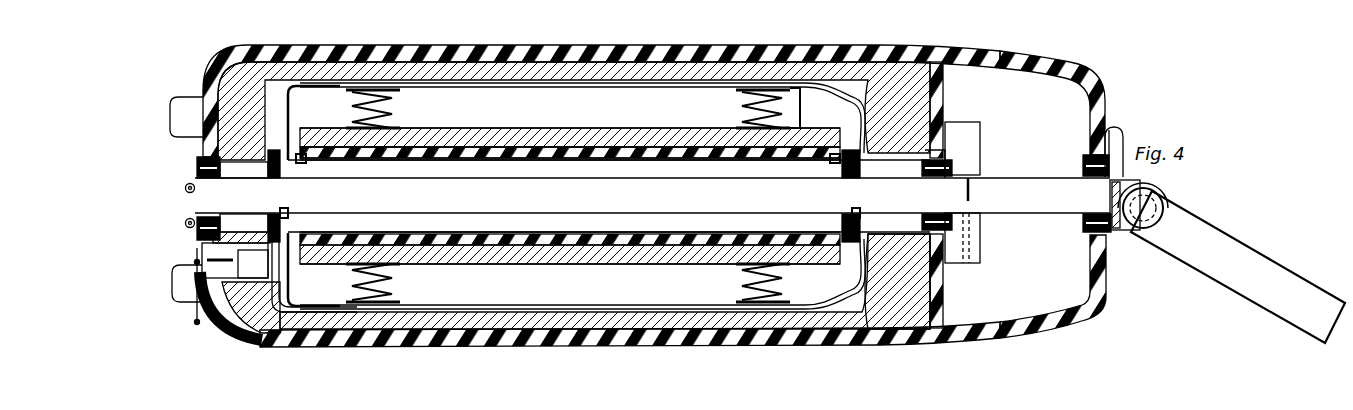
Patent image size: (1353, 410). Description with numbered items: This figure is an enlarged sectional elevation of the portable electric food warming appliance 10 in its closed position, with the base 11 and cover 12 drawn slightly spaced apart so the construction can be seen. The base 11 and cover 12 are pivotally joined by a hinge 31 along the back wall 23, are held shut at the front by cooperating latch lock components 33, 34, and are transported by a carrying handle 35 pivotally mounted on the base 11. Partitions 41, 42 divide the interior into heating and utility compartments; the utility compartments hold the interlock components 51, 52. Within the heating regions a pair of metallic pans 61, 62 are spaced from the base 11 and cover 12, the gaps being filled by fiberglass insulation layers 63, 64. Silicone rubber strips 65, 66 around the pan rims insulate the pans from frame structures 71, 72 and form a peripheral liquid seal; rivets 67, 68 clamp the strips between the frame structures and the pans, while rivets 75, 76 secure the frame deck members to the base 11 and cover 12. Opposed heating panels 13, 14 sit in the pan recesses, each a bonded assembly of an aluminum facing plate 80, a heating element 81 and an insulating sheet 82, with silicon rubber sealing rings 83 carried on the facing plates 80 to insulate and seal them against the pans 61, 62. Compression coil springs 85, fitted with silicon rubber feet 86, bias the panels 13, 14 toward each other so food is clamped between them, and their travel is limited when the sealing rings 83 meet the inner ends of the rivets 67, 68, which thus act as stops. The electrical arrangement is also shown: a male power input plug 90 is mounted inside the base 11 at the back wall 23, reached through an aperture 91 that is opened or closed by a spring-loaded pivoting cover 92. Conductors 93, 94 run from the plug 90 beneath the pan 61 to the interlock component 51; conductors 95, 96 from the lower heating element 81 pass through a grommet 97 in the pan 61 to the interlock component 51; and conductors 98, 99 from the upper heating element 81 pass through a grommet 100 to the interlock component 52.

The portable electric food warming appliance 10 is at (1143, 58).
The base 11 is at (1115, 310).
The cover 12 is at (1108, 100).
The heating panel 13 is at (550, 232).
The heating panel 14 is at (512, 165).
The back wall 23 is at (190, 310).
The hinge 31 is at (185, 222).
The latch lock component 33 is at (1125, 186).
The latch lock component 34 is at (1125, 135).
The carrying handle 35 is at (1288, 275).
The partition 41 is at (965, 200).
The partition 42 is at (930, 165).
The interlock component 51 is at (978, 246).
The interlock component 52 is at (978, 140).
The pan 61 is at (480, 305).
The pan 62 is at (440, 88).
The fiberglass insulation layer 63 is at (420, 347).
The fiberglass insulation layer 64 is at (445, 45).
The silicone rubber strip 65 is at (288, 212).
The silicone rubber strip 66 is at (282, 180).
The rivet 67 is at (300, 215).
The rivet 68 is at (304, 163).
The frame structure 71 is at (252, 224).
The frame structure 72 is at (245, 178).
The rivet 75 is at (205, 258).
The rivet 76 is at (205, 150).
The aluminum facing plate 80 is at (428, 150).
The heating element 81 is at (456, 152).
The insulating sheet 82 is at (500, 160).
The sealing ring 83 is at (295, 135).
The compression coil spring 85 is at (395, 110).
The silicon rubber foot 86 is at (398, 92).
The male power input plug 90 is at (252, 278).
The aperture 91 is at (200, 280).
The cover 92 is at (197, 325).
The conductor 93 is at (276, 318).
The conductor 94 is at (285, 343).
The conductor 95 is at (770, 280).
The conductor 96 is at (897, 281).
The grommet 97 is at (822, 312).
The conductor 98 is at (788, 108).
The conductor 99 is at (842, 88).
The grommet 100 is at (810, 80).